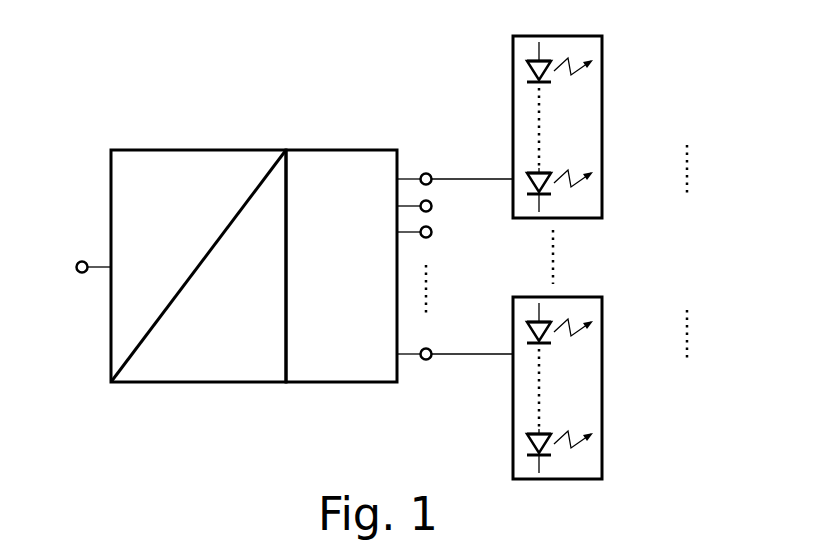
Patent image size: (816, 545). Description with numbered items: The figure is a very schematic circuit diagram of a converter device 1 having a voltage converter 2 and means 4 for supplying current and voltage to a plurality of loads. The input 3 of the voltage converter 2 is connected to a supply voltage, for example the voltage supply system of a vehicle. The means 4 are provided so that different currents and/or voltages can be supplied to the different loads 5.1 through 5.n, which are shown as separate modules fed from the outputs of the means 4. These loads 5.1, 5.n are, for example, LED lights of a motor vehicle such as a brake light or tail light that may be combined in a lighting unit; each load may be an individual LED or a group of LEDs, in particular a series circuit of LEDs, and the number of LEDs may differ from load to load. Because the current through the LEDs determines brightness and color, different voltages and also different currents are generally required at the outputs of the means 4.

The converter device 1 is at (86, 118).
The voltage converter 2 is at (165, 149).
The input 3 is at (78, 260).
The means for supplying different currents and/or voltages 4 is at (329, 149).
The load 5.1 is at (602, 135).
The load 5.n is at (602, 375).